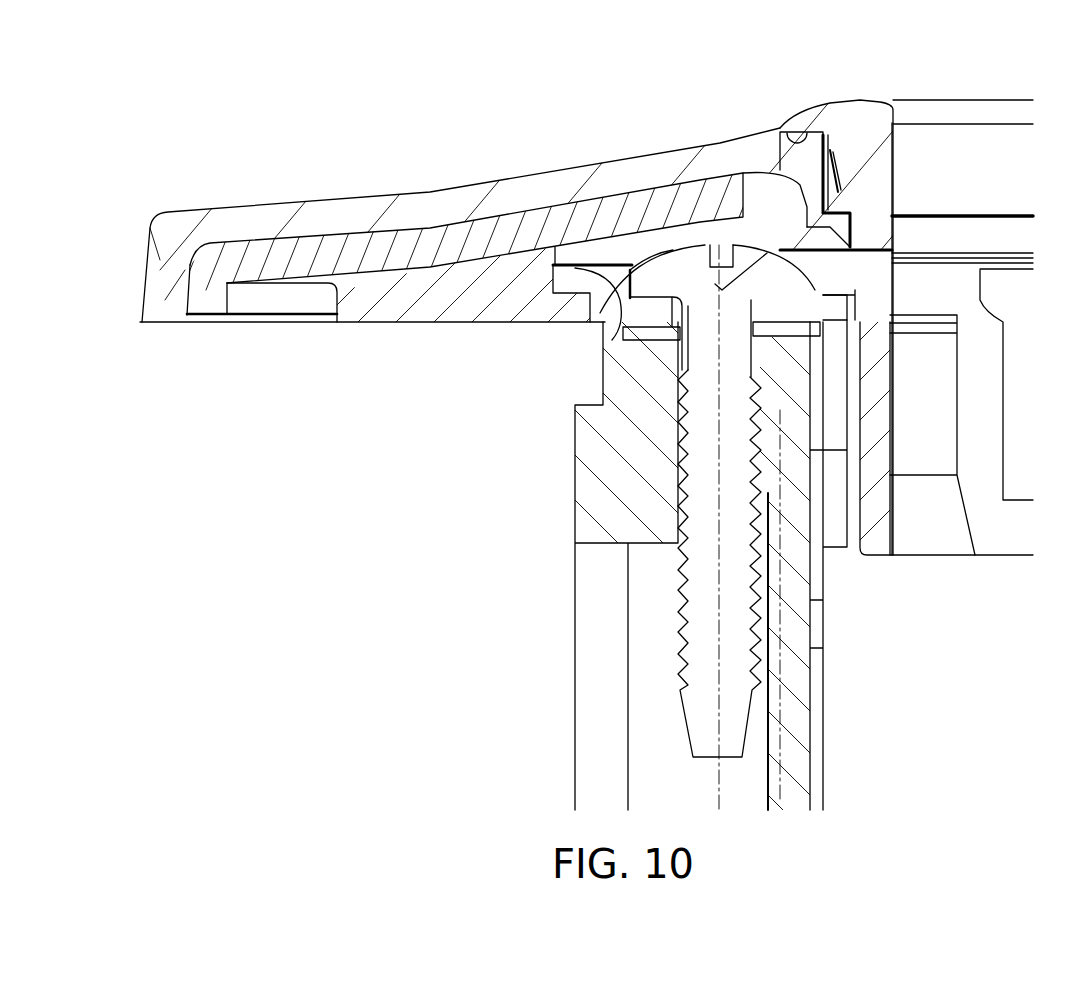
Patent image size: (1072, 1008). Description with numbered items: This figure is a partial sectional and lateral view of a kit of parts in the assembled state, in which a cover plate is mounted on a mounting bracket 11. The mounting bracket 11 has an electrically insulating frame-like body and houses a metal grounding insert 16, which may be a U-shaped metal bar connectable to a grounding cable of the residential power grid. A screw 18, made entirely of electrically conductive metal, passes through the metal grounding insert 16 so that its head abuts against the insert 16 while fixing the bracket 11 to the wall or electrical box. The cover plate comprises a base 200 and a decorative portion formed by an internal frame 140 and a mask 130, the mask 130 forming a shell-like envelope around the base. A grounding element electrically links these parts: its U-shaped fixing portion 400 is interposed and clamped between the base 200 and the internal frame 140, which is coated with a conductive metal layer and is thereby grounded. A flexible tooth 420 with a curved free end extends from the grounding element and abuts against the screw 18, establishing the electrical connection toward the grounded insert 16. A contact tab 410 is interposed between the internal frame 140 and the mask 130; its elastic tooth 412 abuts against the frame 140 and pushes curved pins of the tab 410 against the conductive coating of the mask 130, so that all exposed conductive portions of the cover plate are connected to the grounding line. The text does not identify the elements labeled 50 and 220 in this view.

The mounting bracket 11 is at (428, 318).
The metal grounding insert 16 is at (885, 282).
The screw 18 is at (678, 618).
The block 50 is at (578, 478).
The mask 130 is at (345, 212).
The internal frame 140 is at (812, 106).
The base 200 is at (193, 318).
The strip 220 is at (770, 176).
The fixing portion 400 is at (860, 226).
The contact tab 410 is at (828, 156).
The elastic tooth 412 is at (838, 190).
The flexible tooth 420 is at (620, 300).